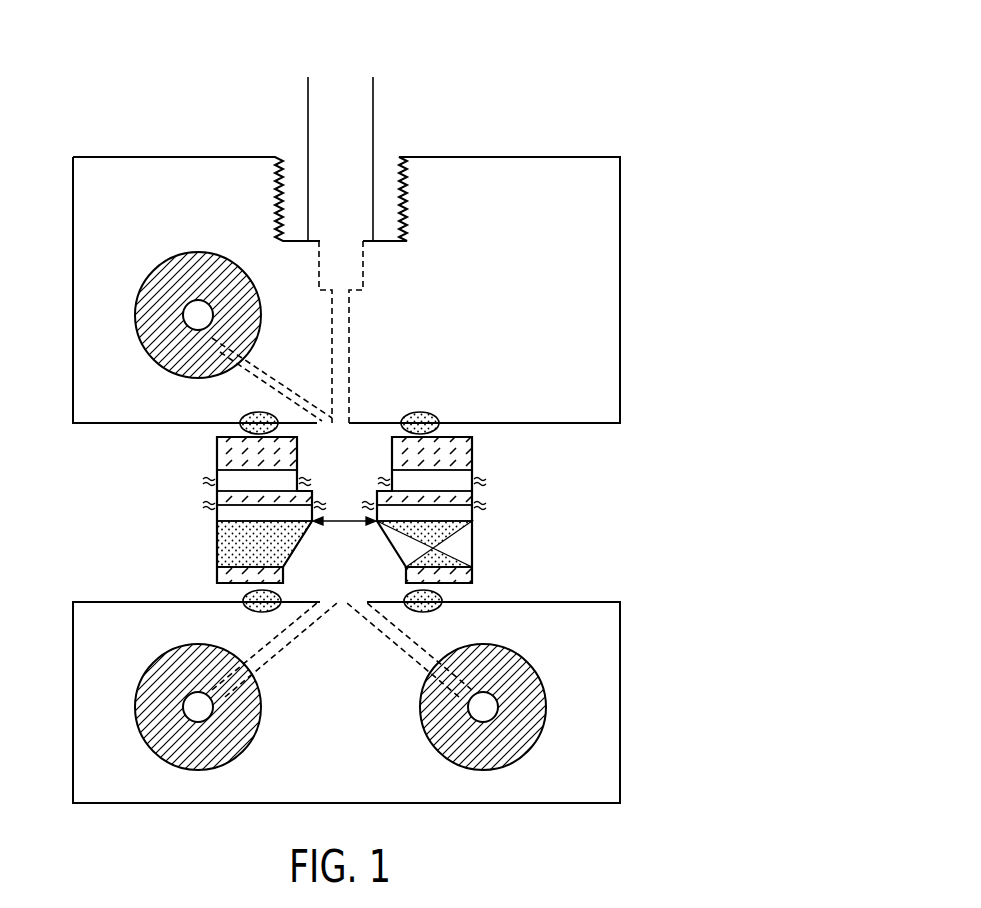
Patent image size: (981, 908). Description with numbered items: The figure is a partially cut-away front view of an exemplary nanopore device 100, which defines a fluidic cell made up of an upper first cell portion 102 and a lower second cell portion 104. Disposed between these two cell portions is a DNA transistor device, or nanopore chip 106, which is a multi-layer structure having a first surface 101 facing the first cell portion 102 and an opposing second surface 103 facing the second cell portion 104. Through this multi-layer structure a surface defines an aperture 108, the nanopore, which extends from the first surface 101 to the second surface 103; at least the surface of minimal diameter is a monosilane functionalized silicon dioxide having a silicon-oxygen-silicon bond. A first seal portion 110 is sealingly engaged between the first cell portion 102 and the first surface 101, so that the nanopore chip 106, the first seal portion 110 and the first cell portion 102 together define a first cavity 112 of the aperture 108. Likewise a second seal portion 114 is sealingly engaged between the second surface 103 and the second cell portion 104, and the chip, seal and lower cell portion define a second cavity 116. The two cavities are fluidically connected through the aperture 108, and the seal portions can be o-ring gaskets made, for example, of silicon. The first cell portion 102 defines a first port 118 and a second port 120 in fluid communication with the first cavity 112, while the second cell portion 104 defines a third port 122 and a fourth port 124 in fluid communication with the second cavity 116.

The nanopore device 100 is at (583, 70).
The first surface 101 is at (467, 432).
The first cell portion 102 is at (583, 158).
The second surface 103 is at (465, 600).
The second cell portion 104 is at (621, 705).
The nanopore chip 106 is at (385, 500).
The aperture 108 is at (344, 490).
The first seal portion 110 is at (238, 437).
The first cavity 112 is at (335, 448).
The second seal portion 114 is at (253, 606).
The second cavity 116 is at (338, 562).
The first port 118 is at (346, 90).
The second port 120 is at (198, 314).
The third port 122 is at (197, 707).
The fourth port 124 is at (483, 707).